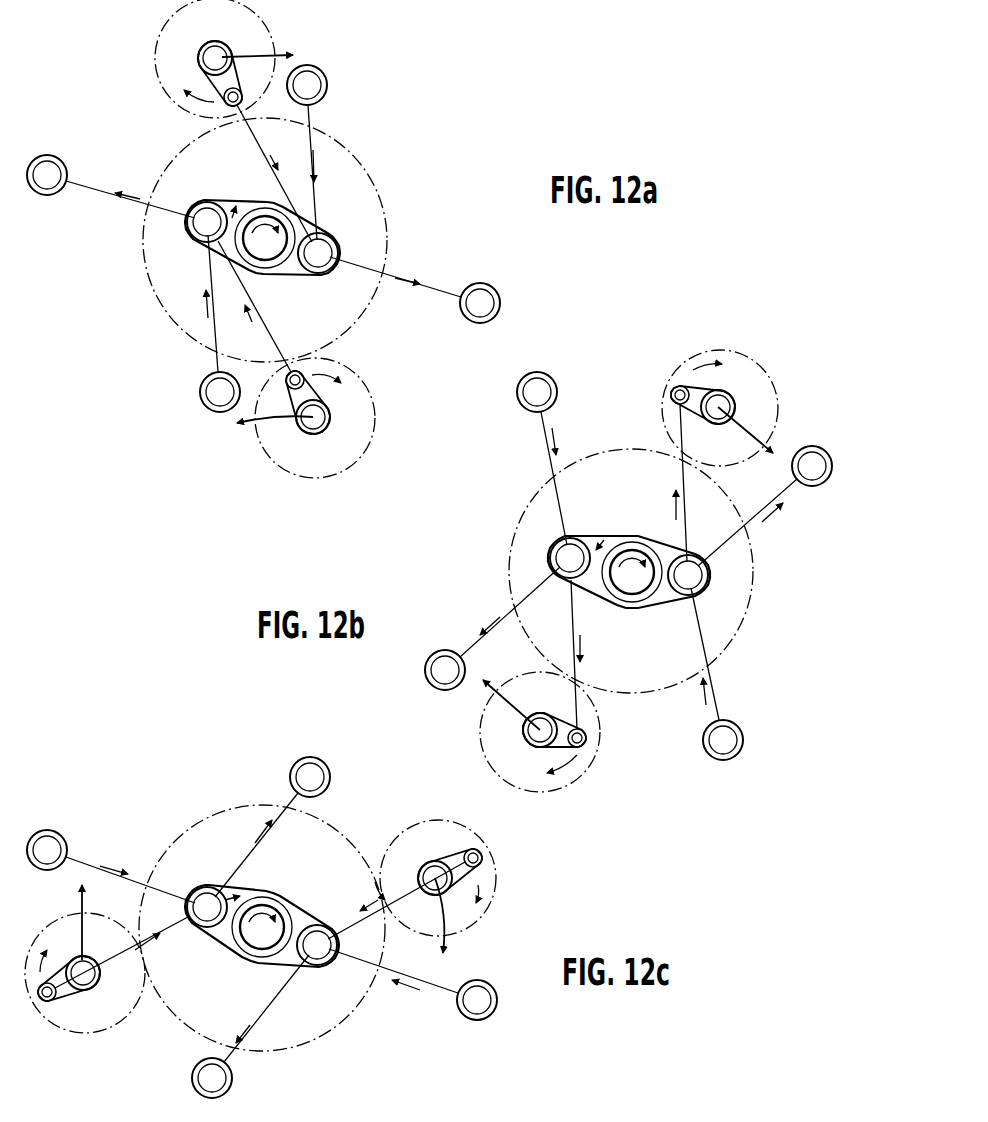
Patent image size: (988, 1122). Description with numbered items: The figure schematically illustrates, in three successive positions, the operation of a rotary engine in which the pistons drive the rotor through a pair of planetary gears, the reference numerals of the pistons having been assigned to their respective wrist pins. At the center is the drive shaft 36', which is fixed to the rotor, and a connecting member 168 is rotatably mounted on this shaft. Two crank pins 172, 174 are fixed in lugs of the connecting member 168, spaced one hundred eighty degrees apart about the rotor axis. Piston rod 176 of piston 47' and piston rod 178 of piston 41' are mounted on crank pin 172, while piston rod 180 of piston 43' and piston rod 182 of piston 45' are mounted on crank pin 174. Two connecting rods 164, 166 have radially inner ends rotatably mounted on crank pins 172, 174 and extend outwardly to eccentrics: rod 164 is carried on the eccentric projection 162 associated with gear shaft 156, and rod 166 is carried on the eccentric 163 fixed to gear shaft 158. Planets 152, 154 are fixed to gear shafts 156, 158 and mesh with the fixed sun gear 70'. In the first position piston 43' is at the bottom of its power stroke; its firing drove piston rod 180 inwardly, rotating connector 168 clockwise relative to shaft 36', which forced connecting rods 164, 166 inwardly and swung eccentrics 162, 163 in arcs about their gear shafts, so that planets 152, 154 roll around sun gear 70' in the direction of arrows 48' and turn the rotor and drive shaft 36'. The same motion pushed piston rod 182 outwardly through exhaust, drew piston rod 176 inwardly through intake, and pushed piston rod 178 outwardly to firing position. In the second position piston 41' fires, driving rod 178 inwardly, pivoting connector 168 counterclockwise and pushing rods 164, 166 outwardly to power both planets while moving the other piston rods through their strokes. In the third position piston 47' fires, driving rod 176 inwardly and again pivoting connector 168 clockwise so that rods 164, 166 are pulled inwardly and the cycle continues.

In FIG. 12a, the drive shaft 36' is at (262, 222).
In FIG. 12b, the drive shaft 36' is at (632, 553).
In FIG. 12c, the drive shaft 36' is at (277, 915).
In FIG. 12a, the piston 41' is at (488, 291).
In FIG. 12b, the piston 41' is at (739, 740).
In FIG. 12c, the piston 41' is at (231, 1078).
In FIG. 12a, the piston 43' is at (206, 389).
In FIG. 12b, the piston 43' is at (445, 654).
In FIG. 12c, the piston 43' is at (65, 850).
In FIG. 12a, the piston 45' is at (60, 160).
In FIG. 12b, the piston 45' is at (559, 392).
In FIG. 12c, the piston 45' is at (325, 776).
In FIG. 12a, the piston 47' is at (320, 78).
In FIG. 12b, the piston 47' is at (816, 480).
In FIG. 12c, the piston 47' is at (482, 989).
In FIG. 12a, the arrows 48' is at (267, 238).
In FIG. 12b, the arrows 48' is at (634, 567).
In FIG. 12c, the arrows 48' is at (263, 919).
In FIG. 12a, the sun gear 70' is at (282, 240).
In FIG. 12b, the sun gear 70' is at (631, 555).
In FIG. 12c, the sun gear 70' is at (262, 926).
In FIG. 12a, the planetary gear 152 is at (253, 30).
In FIG. 12b, the planetary gear 152 is at (742, 352).
In FIG. 12c, the planetary gear 152 is at (430, 822).
In FIG. 12a, the planetary gear 154 is at (364, 382).
In FIG. 12b, the planetary gear 154 is at (598, 730).
In FIG. 12c, the planetary gear 154 is at (128, 1030).
In FIG. 12a, the gear shaft 156 is at (200, 52).
In FIG. 12b, the gear shaft 156 is at (725, 400).
In FIG. 12c, the gear shaft 156 is at (428, 868).
In FIG. 12a, the gear shaft 158 is at (326, 428).
In FIG. 12b, the gear shaft 158 is at (525, 735).
In FIG. 12c, the gear shaft 158 is at (98, 985).
In FIG. 12a, the projection 162 is at (240, 95).
In FIG. 12b, the projection 162 is at (690, 412).
In FIG. 12c, the projection 162 is at (482, 855).
In FIG. 12a, the eccentric 163 is at (286, 376).
In FIG. 12b, the eccentric 163 is at (588, 755).
In FIG. 12c, the eccentric 163 is at (45, 1005).
In FIG. 12a, the connecting rod 164 is at (245, 145).
In FIG. 12b, the connecting rod 164 is at (690, 515).
In FIG. 12c, the connecting rod 164 is at (368, 932).
In FIG. 12a, the connecting rod 166 is at (280, 345).
In FIG. 12b, the connecting rod 166 is at (585, 675).
In FIG. 12c, the connecting rod 166 is at (165, 935).
In FIG. 12a, the connecting member 168 is at (280, 272).
In FIG. 12b, the connecting member 168 is at (641, 592).
In FIG. 12c, the connecting member 168 is at (254, 900).
In FIG. 12a, the crank pin 172 is at (326, 247).
In FIG. 12b, the crank pin 172 is at (700, 582).
In FIG. 12c, the crank pin 172 is at (335, 968).
In FIG. 12a, the crank pin 174 is at (205, 210).
In FIG. 12b, the crank pin 174 is at (560, 560).
In FIG. 12c, the crank pin 174 is at (208, 890).
In FIG. 12a, the piston rod 176 is at (314, 118).
In FIG. 12b, the piston rod 176 is at (790, 482).
In FIG. 12c, the piston rod 176 is at (436, 975).
In FIG. 12a, the piston rod 178 is at (430, 288).
In FIG. 12b, the piston rod 178 is at (712, 680).
In FIG. 12c, the piston rod 178 is at (295, 1002).
In FIG. 12a, the piston rod 180 is at (207, 290).
In FIG. 12b, the piston rod 180 is at (555, 595).
In FIG. 12c, the piston rod 180 is at (168, 886).
In FIG. 12a, the piston rod 182 is at (108, 190).
In FIG. 12b, the piston rod 182 is at (565, 510).
In FIG. 12c, the piston rod 182 is at (278, 818).